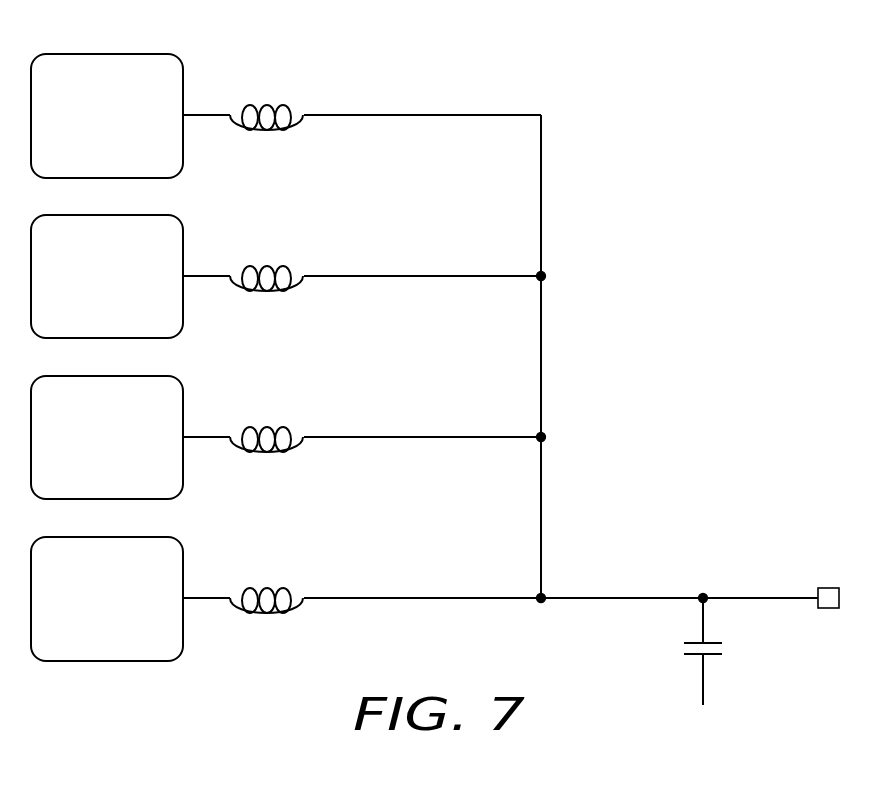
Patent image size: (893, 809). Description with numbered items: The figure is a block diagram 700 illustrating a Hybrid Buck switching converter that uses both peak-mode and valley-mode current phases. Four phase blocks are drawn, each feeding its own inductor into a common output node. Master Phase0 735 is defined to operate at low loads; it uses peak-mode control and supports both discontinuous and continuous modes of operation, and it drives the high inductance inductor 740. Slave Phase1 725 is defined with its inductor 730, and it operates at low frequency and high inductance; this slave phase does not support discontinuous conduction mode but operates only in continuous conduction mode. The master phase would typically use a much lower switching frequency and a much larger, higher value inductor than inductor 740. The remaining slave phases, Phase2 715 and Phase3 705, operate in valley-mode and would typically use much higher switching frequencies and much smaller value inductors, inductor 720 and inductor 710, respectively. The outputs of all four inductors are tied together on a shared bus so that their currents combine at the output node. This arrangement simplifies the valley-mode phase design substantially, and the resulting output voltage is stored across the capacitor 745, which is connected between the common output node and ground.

The block diagram 700 is at (405, 62).
The Phase3 705 is at (183, 162).
The inductor 710 is at (266, 66).
The Phase2 715 is at (183, 324).
The inductor 720 is at (266, 229).
The Phase1 725 is at (183, 484).
The inductor 730 is at (266, 386).
The Phase0 735 is at (183, 646).
The inductor 740 is at (266, 556).
The capacitor 745 is at (712, 658).